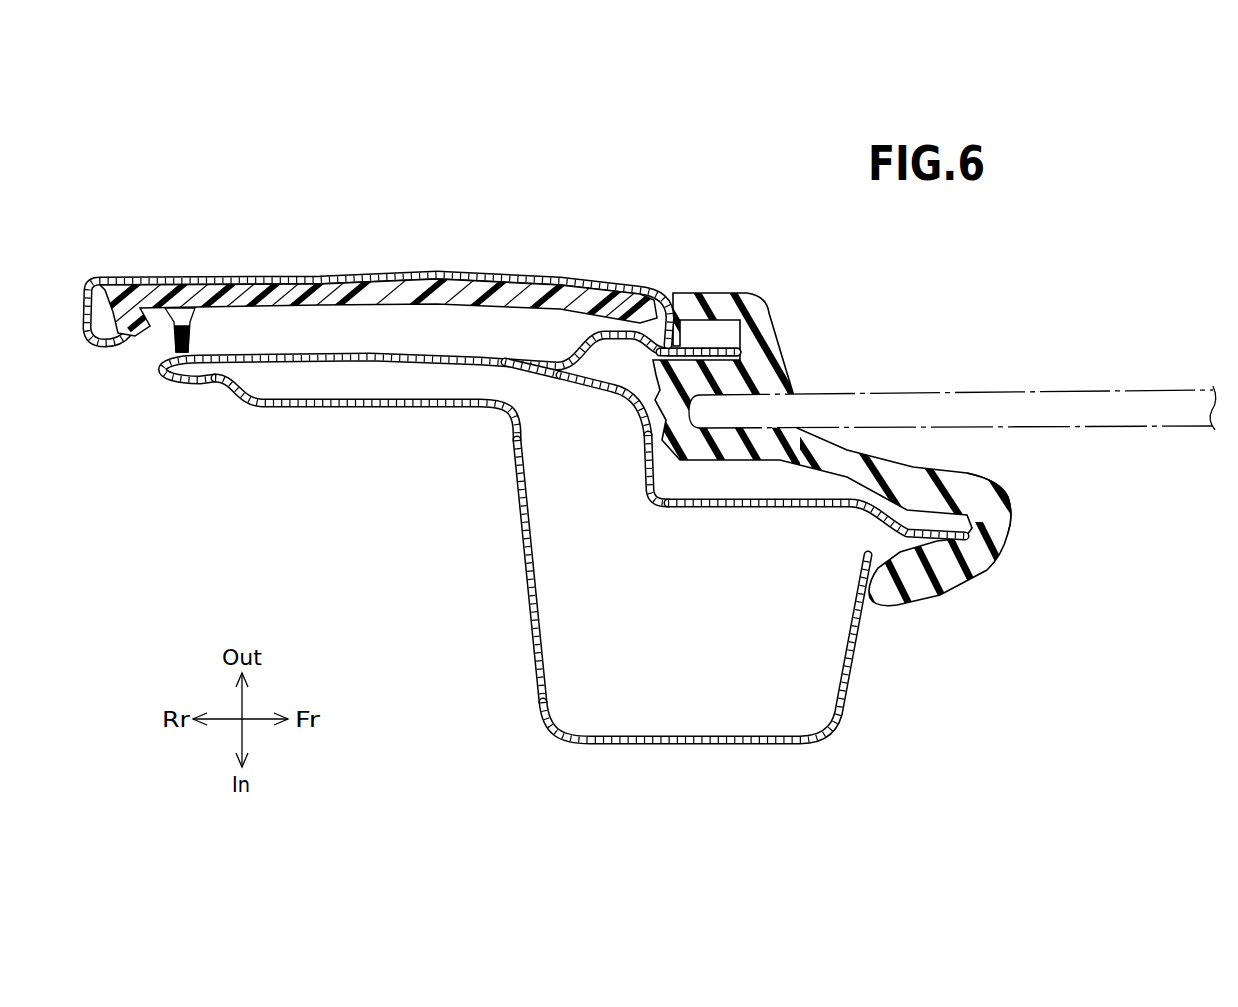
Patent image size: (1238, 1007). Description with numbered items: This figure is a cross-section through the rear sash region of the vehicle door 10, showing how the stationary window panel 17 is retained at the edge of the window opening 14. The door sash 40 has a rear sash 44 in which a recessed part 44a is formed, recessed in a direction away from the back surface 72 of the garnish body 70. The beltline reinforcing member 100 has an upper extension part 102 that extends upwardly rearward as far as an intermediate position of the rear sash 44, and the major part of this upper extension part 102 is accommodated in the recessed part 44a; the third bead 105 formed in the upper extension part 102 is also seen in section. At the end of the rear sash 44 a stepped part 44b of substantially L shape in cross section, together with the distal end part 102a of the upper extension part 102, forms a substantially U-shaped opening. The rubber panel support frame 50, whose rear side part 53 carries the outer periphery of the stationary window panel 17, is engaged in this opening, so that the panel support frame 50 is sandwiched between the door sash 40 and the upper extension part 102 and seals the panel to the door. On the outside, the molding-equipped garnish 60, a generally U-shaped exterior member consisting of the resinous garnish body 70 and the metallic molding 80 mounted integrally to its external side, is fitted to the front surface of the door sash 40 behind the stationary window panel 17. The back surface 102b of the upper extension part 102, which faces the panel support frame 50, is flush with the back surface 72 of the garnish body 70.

The vehicle door 10 is at (133, 152).
The window opening 14 is at (1155, 529).
The stationary window panel 17 is at (1046, 390).
The door sash 40 is at (541, 559).
The rear sash 44 is at (520, 570).
The recessed part 44a is at (612, 390).
The stepped part 44b is at (733, 505).
The panel support frame 50 is at (796, 480).
The rear side part 53 is at (1013, 541).
The molding-equipped garnish 60 is at (381, 230).
The garnish body 70 is at (441, 158).
The back surface 72 is at (266, 305).
The molding 80 is at (411, 264).
The beltline reinforcing member 100 is at (531, 352).
The upper extension part 102 is at (530, 439).
The distal end part 102a is at (709, 346).
The back surface 102b is at (510, 373).
The third bead 105 is at (603, 332).